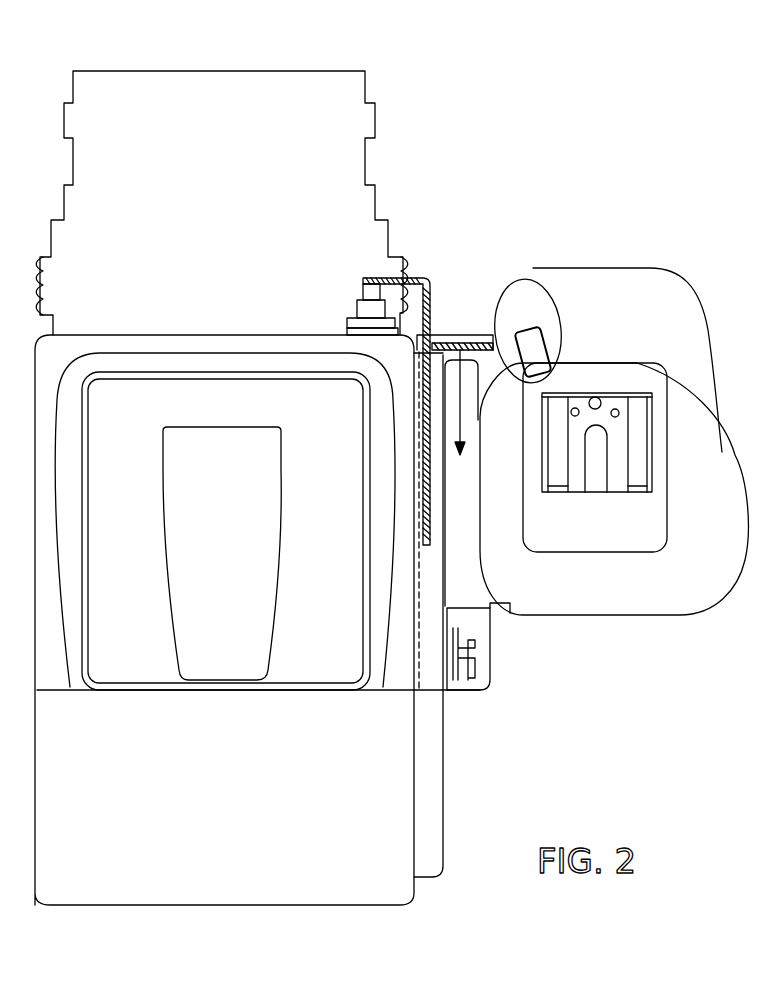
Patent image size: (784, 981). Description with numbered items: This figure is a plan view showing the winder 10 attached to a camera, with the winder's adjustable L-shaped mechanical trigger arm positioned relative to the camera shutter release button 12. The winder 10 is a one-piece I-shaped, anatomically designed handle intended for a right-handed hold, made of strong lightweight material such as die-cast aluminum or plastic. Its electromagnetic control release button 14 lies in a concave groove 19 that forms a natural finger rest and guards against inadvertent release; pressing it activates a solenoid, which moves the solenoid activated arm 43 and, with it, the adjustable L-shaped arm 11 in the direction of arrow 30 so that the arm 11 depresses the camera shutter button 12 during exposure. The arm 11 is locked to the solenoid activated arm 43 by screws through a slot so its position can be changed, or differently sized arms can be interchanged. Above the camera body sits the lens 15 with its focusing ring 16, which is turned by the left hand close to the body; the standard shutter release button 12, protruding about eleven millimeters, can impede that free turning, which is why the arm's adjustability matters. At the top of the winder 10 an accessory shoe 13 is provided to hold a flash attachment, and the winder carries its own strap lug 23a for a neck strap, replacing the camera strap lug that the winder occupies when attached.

The winder 10 is at (607, 268).
The adjustable L-shaped arm 11 is at (418, 283).
The camera shutter release button 12 is at (362, 308).
The accessory shoe 13 is at (642, 410).
The electromagnetic control release button 14 is at (530, 347).
The lens 15 is at (227, 87).
The focusing ring 16 is at (43, 285).
The concave groove 19 is at (507, 313).
The strap lug 23a is at (473, 652).
The arrow 30 is at (480, 402).
The solenoid activated arm 43 is at (440, 343).